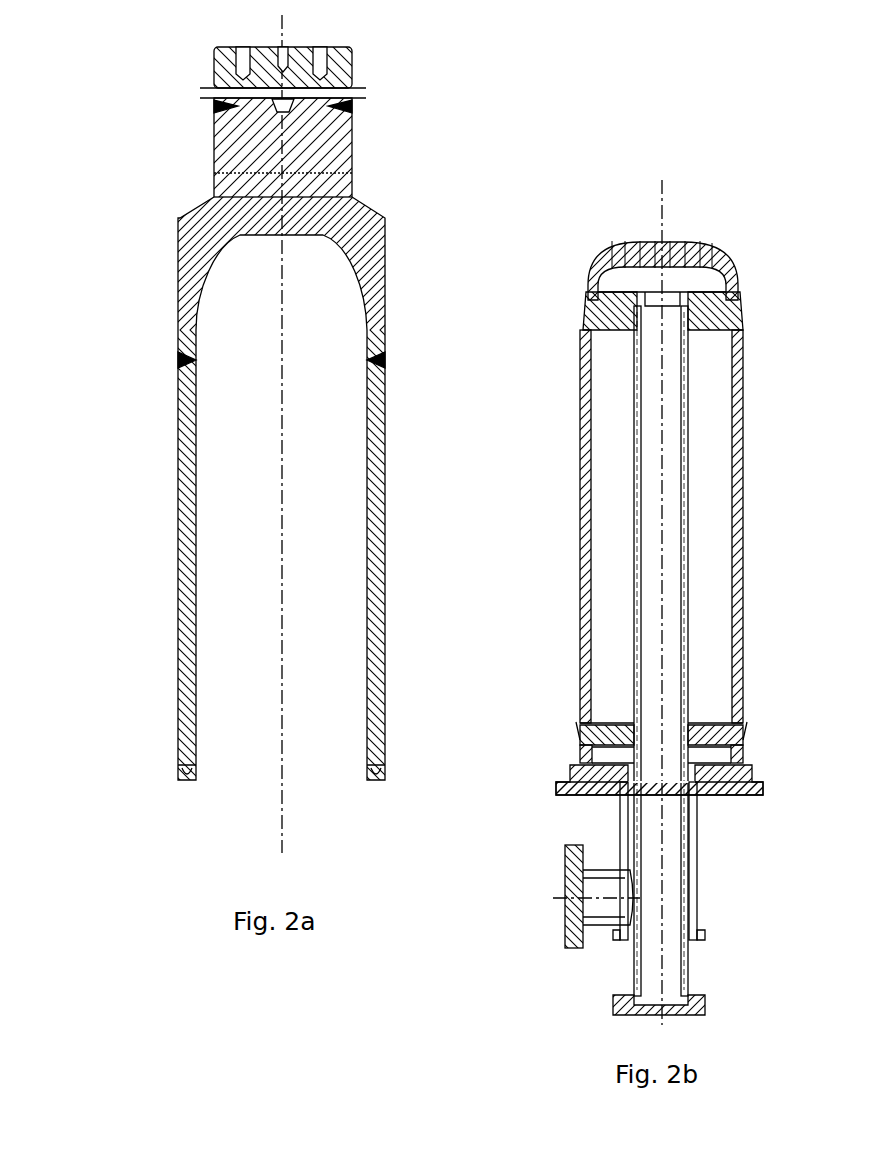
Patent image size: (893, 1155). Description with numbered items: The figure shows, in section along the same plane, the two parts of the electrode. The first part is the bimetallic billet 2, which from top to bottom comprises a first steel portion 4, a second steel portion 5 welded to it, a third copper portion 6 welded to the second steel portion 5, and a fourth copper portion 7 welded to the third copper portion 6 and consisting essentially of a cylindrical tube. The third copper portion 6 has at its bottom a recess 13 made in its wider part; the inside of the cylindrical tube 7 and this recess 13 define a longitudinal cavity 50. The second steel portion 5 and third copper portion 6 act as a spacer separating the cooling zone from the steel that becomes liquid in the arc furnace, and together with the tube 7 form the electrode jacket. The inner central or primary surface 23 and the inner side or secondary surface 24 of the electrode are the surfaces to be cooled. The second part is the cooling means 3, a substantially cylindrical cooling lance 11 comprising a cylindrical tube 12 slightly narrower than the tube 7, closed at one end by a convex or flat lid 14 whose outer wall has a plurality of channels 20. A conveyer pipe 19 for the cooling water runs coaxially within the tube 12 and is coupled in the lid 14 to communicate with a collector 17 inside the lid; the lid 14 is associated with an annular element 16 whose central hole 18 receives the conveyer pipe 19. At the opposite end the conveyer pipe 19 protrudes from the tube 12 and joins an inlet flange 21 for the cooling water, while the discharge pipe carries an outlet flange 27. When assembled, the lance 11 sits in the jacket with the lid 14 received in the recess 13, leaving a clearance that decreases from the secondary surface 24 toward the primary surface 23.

In FIG. 2a, the bimetallic billet 2 is at (264, 393).
In FIG. 2a, the first steel portion 4 is at (213, 77).
In FIG. 2a, the second steel portion 5 is at (235, 148).
In FIG. 2a, the third copper portion 6 is at (221, 478).
In FIG. 2a, the fourth copper portion 7 is at (187, 518).
In FIG. 2a, the recess 13 is at (323, 277).
In FIG. 2a, the inner central or primary surface 23 is at (265, 240).
In FIG. 2a, the inner side or secondary surface 24 is at (212, 325).
In FIG. 2a, the longitudinal cavity 50 is at (300, 459).
In FIG. 2b, the cooling means 3 is at (641, 536).
In FIG. 2b, the cooling lance 11 is at (714, 526).
In FIG. 2b, the cylindrical tube 12 is at (740, 603).
In FIG. 2b, the lid 14 is at (655, 232).
In FIG. 2b, the annular element 16 is at (742, 298).
In FIG. 2b, the collector 17 is at (628, 283).
In FIG. 2b, the central hole 18 is at (650, 312).
In FIG. 2b, the conveyer pipe 19 is at (637, 462).
In FIG. 2b, the channels 20 is at (640, 242).
In FIG. 2b, the inlet flange 21 is at (705, 1005).
In FIG. 2b, the outlet flange 27 is at (565, 913).